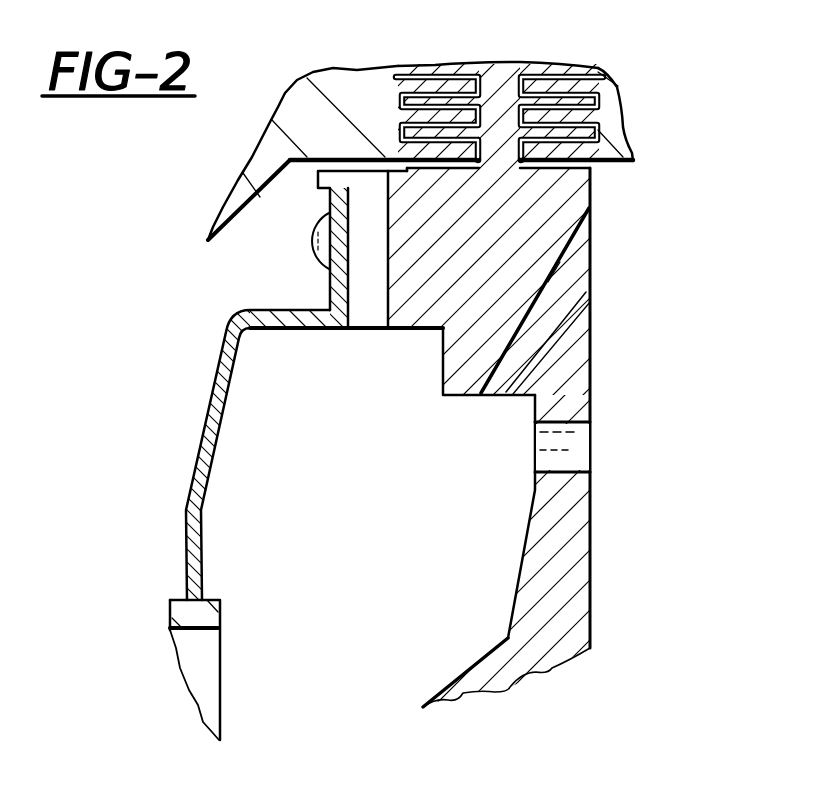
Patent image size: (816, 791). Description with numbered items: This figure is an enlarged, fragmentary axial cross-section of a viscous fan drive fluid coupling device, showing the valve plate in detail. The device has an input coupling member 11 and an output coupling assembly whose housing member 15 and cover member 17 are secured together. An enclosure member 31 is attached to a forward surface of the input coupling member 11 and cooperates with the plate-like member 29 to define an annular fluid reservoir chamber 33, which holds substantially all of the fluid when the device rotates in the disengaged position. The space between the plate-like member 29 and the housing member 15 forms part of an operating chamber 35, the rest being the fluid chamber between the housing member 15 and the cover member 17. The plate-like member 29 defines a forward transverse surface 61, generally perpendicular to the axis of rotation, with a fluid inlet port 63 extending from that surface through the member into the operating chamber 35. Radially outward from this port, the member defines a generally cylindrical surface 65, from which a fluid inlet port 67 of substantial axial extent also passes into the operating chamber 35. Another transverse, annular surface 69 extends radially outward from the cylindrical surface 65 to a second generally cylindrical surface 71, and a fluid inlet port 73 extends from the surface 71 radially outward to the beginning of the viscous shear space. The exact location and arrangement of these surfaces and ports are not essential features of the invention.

The input coupling member 11 is at (505, 97).
The housing member 15 is at (612, 122).
The cover member 17 is at (292, 115).
The plate-like member 29 is at (575, 515).
The enclosure member 31 is at (197, 515).
The fluid reservoir chamber 33 is at (363, 613).
The operating chamber 35 is at (688, 330).
The forward transverse surface 61 is at (530, 530).
The fluid inlet port 63 is at (575, 437).
The cylindrical surface 65 is at (465, 397).
The fluid inlet port 67 is at (582, 286).
The transverse annular surface 69 is at (442, 367).
The cylindrical surface 71 is at (410, 330).
The fluid inlet port 73 is at (358, 305).